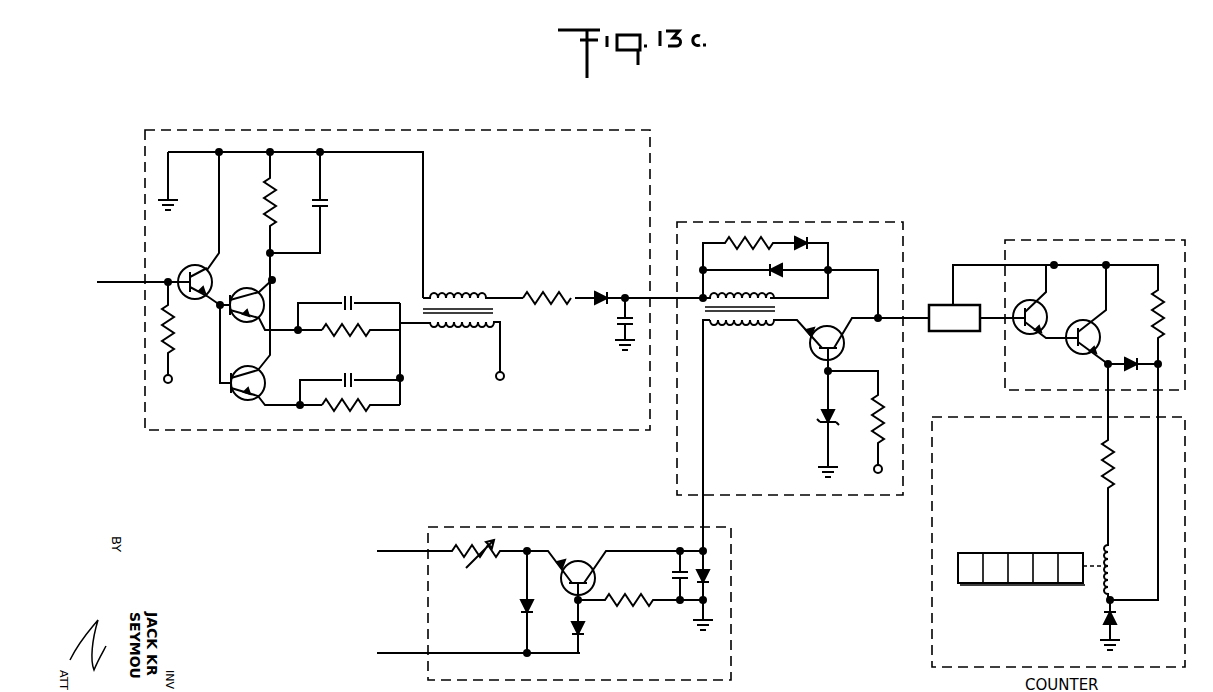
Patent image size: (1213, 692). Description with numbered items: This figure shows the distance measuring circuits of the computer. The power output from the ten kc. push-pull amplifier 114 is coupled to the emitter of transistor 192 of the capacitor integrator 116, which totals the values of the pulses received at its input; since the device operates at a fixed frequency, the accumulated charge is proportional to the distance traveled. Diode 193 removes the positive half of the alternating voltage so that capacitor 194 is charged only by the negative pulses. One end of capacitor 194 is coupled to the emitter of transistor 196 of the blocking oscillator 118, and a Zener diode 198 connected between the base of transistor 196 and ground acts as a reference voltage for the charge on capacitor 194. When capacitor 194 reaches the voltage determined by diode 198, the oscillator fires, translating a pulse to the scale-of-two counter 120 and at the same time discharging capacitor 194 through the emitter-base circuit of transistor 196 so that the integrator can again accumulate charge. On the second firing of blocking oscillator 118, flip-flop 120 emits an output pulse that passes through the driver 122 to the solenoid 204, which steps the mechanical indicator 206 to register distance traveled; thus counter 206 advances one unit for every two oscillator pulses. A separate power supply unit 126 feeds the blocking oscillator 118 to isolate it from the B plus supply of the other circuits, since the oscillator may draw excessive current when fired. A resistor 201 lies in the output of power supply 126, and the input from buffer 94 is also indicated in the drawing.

The power supply unit 126 is at (578, 122).
The resistor 201 is at (566, 266).
The blocking oscillator 118 is at (926, 216).
The transistor 196 is at (812, 351).
The Zener diode 198 is at (822, 418).
The scale of two counter 120 is at (940, 333).
The driver 122 is at (1176, 238).
The capacitor integrator 116 is at (752, 636).
The transistor 192 is at (598, 580).
The diode 193 is at (517, 605).
The capacitor 194 is at (674, 578).
The mechanical indicator 206 is at (1028, 540).
The solenoid 204 is at (1104, 578).
The ten kc. amplifier 114 is at (377, 602).
The buffer 94 is at (85, 316).